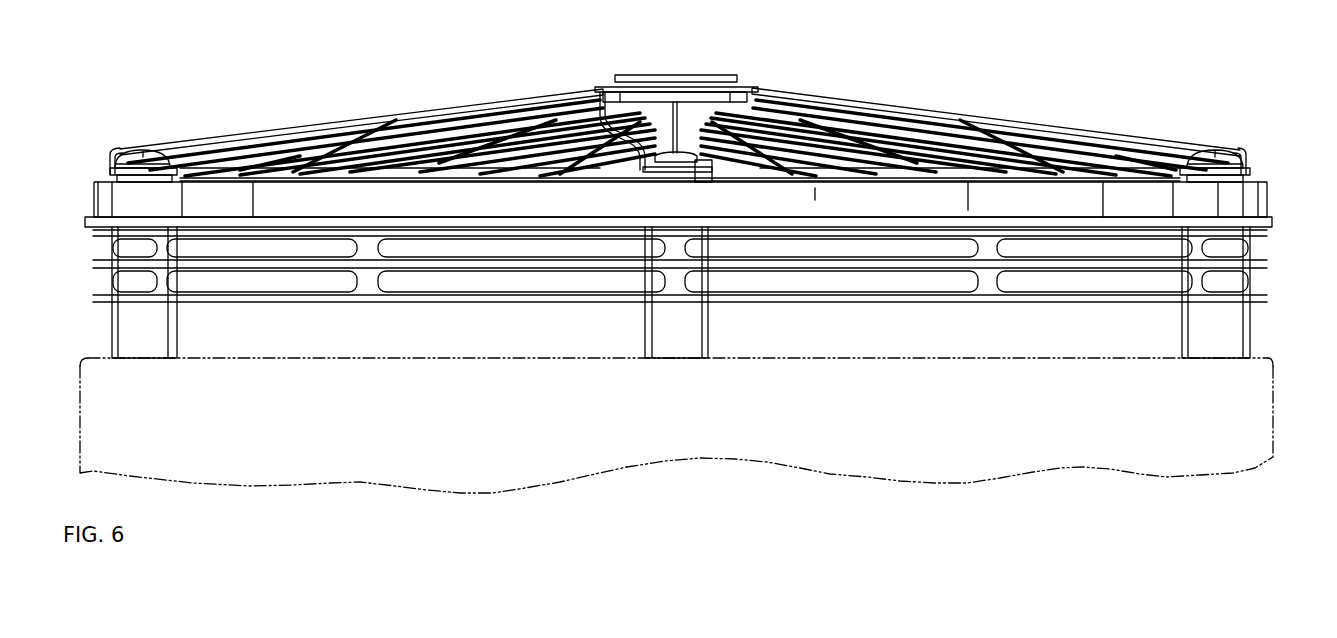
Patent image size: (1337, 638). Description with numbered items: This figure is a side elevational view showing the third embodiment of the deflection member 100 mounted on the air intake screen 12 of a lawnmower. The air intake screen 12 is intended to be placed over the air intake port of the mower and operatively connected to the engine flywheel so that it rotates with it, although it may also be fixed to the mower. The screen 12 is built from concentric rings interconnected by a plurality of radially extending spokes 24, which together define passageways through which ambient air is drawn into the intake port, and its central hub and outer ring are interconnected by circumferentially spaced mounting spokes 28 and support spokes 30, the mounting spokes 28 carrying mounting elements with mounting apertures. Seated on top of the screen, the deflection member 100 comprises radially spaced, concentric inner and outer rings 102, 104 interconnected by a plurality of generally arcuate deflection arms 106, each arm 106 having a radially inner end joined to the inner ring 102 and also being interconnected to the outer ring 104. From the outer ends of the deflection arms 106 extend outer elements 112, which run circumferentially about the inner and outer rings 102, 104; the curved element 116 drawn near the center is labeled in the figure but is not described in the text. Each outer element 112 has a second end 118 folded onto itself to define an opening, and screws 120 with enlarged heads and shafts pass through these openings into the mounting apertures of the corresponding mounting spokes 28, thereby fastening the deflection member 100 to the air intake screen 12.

The air intake screen 12 is at (1270, 202).
The spokes 24 is at (318, 180).
The mounting spokes 28 is at (247, 172).
The support spokes 30 is at (425, 176).
The deflection member 100 is at (1013, 102).
The inner ring 102 is at (740, 80).
The outer ring 104 is at (640, 78).
The deflection arms 106 is at (226, 128).
The outer elements 112 is at (103, 164).
The curved tube 116 is at (600, 112).
The second end 118 is at (140, 172).
The screws 120 is at (137, 153).